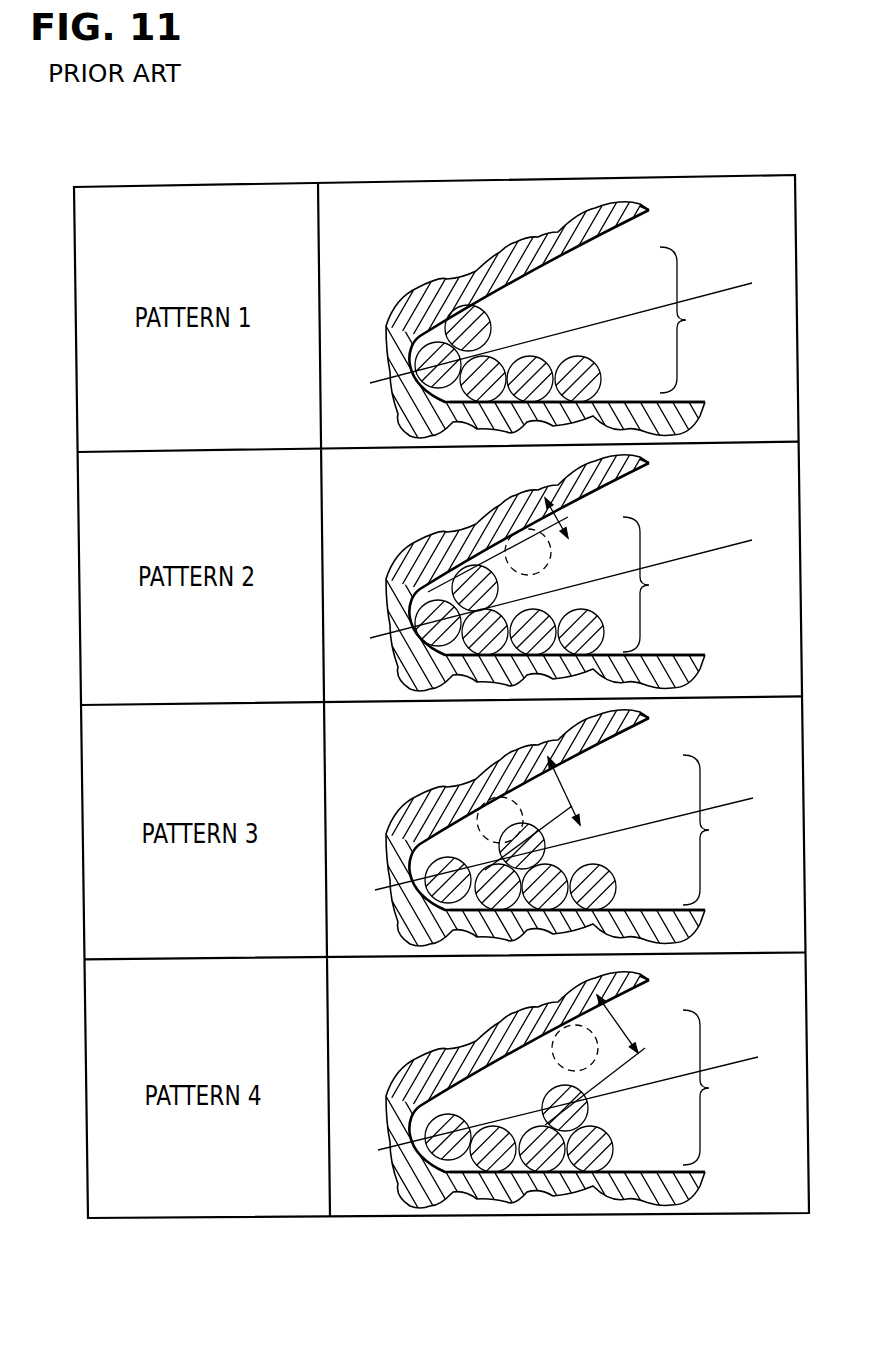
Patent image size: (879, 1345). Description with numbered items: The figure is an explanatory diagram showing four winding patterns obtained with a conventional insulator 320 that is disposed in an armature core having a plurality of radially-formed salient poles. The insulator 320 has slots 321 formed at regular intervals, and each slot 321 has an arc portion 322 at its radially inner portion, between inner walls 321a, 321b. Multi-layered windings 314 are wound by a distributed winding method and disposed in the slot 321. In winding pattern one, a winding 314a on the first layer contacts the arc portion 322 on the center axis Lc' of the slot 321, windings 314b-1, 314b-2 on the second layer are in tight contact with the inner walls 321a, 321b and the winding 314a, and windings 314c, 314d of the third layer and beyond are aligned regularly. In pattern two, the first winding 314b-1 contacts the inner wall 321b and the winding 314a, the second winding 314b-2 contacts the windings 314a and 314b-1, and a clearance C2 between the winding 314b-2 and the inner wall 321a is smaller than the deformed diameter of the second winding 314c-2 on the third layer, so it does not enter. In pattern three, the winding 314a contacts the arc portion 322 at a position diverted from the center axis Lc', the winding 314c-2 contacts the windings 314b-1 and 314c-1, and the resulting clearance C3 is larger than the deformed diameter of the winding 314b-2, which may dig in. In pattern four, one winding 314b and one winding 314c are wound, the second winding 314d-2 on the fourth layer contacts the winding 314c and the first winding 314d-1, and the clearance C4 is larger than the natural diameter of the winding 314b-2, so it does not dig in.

The insulator 320 is at (356, 268).
The slot 321 is at (692, 275).
The inner wall 321a is at (652, 210).
The inner wall 321b is at (705, 399).
The arc portion 322 is at (406, 405).
The multi-layered windings 314 is at (688, 344).
The winding on first layer 314a is at (425, 348).
The winding on second layer 314b is at (486, 1127).
The first winding on second layer 314b-1 is at (490, 357).
The second winding on second layer 314b-2 is at (467, 305).
The winding on third layer 314c is at (548, 360).
The first winding on third layer 314c-1 is at (605, 867).
The second winding on third layer 314c-2 is at (520, 528).
The winding on fourth layer 314d is at (599, 371).
The first winding on fourth layer 314d-1 is at (613, 1150).
The second winding on fourth layer 314d-2 is at (588, 1110).
The center axis Lc is at (728, 290).
The clearance C2 is at (518, 545).
The clearance C3 is at (553, 813).
The clearance C4 is at (609, 1060).